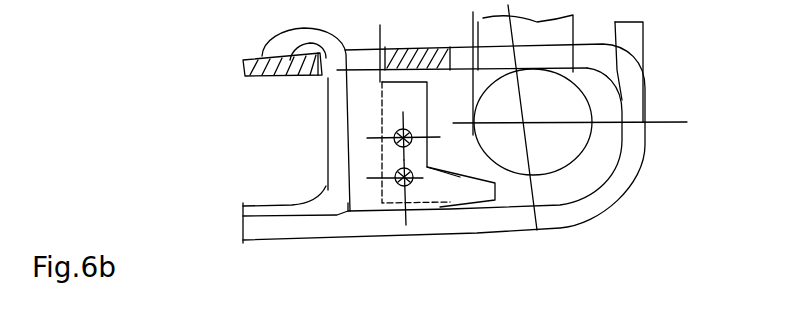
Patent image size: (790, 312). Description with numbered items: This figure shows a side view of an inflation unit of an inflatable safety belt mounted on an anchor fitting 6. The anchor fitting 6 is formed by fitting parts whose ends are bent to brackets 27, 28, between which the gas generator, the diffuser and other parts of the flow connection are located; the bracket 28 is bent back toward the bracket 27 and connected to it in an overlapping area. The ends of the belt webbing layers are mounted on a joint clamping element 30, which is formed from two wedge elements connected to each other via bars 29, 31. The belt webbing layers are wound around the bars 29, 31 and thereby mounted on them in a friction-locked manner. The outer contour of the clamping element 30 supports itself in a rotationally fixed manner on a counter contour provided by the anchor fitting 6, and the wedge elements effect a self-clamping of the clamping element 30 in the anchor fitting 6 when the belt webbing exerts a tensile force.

The anchor fitting 6 is at (292, 227).
The bracket 27 is at (337, 90).
The bracket 28 is at (632, 93).
The bar 29 is at (395, 133).
The clamping element 30 is at (453, 188).
The bar 31 is at (397, 174).